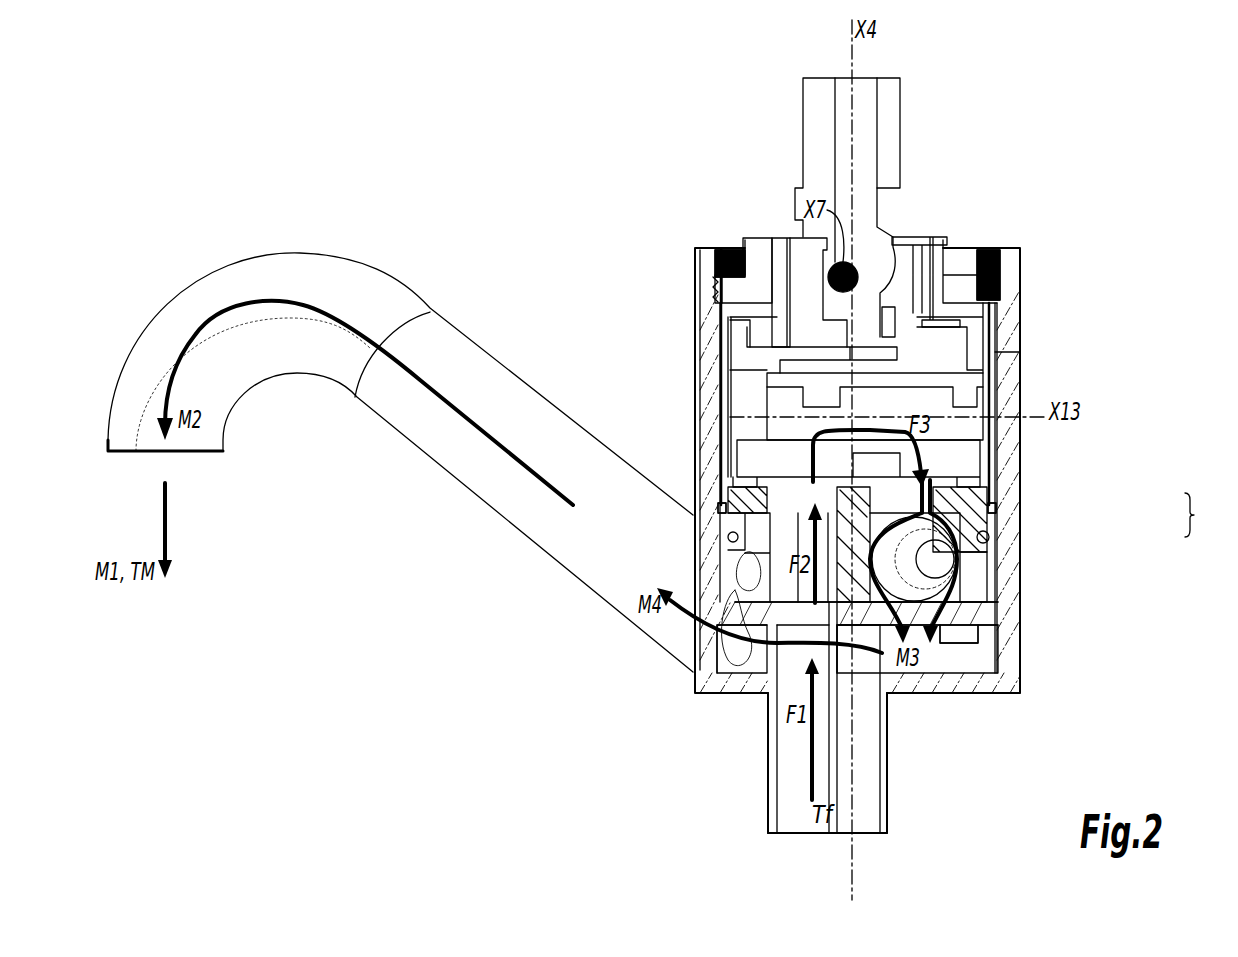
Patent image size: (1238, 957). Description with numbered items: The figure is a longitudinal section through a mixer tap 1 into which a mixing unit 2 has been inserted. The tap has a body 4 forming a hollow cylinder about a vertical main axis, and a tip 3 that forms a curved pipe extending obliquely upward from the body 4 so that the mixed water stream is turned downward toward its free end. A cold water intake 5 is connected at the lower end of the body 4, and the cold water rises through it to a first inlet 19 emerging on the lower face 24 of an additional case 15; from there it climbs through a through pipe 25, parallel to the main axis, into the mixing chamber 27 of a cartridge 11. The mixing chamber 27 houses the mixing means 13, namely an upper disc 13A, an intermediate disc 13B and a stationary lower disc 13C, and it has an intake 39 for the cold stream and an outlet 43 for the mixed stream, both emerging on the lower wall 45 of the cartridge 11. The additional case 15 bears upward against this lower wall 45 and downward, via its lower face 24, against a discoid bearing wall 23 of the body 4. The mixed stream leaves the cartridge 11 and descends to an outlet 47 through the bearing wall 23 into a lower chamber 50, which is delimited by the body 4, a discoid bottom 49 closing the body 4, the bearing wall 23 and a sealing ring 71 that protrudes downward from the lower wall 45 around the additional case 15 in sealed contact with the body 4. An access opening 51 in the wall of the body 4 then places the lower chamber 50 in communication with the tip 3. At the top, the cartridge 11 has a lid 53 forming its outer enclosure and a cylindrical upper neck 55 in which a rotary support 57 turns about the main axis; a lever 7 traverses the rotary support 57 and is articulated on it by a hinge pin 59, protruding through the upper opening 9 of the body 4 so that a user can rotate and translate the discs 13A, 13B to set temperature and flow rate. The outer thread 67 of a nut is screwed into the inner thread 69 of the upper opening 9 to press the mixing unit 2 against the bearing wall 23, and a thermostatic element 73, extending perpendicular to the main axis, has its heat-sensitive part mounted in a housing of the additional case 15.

The mixer tap 1 is at (537, 212).
The mixing unit 2 is at (1197, 515).
The tip 3 is at (275, 277).
The body 4 is at (1007, 442).
The cold water intake 5 is at (790, 765).
The lever 7 is at (890, 115).
The upper opening 9 is at (985, 270).
The cartridge 11 is at (1020, 352).
The mixing means 13 is at (590, 250).
The upper disc 13A is at (747, 387).
The intermediate disc 13B is at (747, 420).
The lower disc 13C is at (747, 455).
The additional case 15 is at (993, 508).
The first inlet 19 is at (820, 643).
The bearing wall 23 is at (967, 617).
The lower face 24 is at (763, 607).
The through pipe 25 is at (818, 605).
The mixing chamber 27 is at (780, 350).
The intake 39 is at (797, 497).
The outlet 43 is at (870, 513).
The lower wall 45 is at (985, 540).
The outlet 47 is at (887, 630).
The bottom 49 is at (985, 690).
The lower chamber 50 is at (985, 655).
The access opening 51 is at (745, 655).
The lid 53 is at (720, 300).
The upper neck 55 is at (907, 257).
The rotary support 57 is at (803, 252).
The hinge pin 59 is at (841, 262).
The outer thread 67 is at (740, 250).
The inner thread 69 is at (722, 290).
The sealing ring 71 is at (745, 523).
The thermostatic element 73 is at (930, 562).